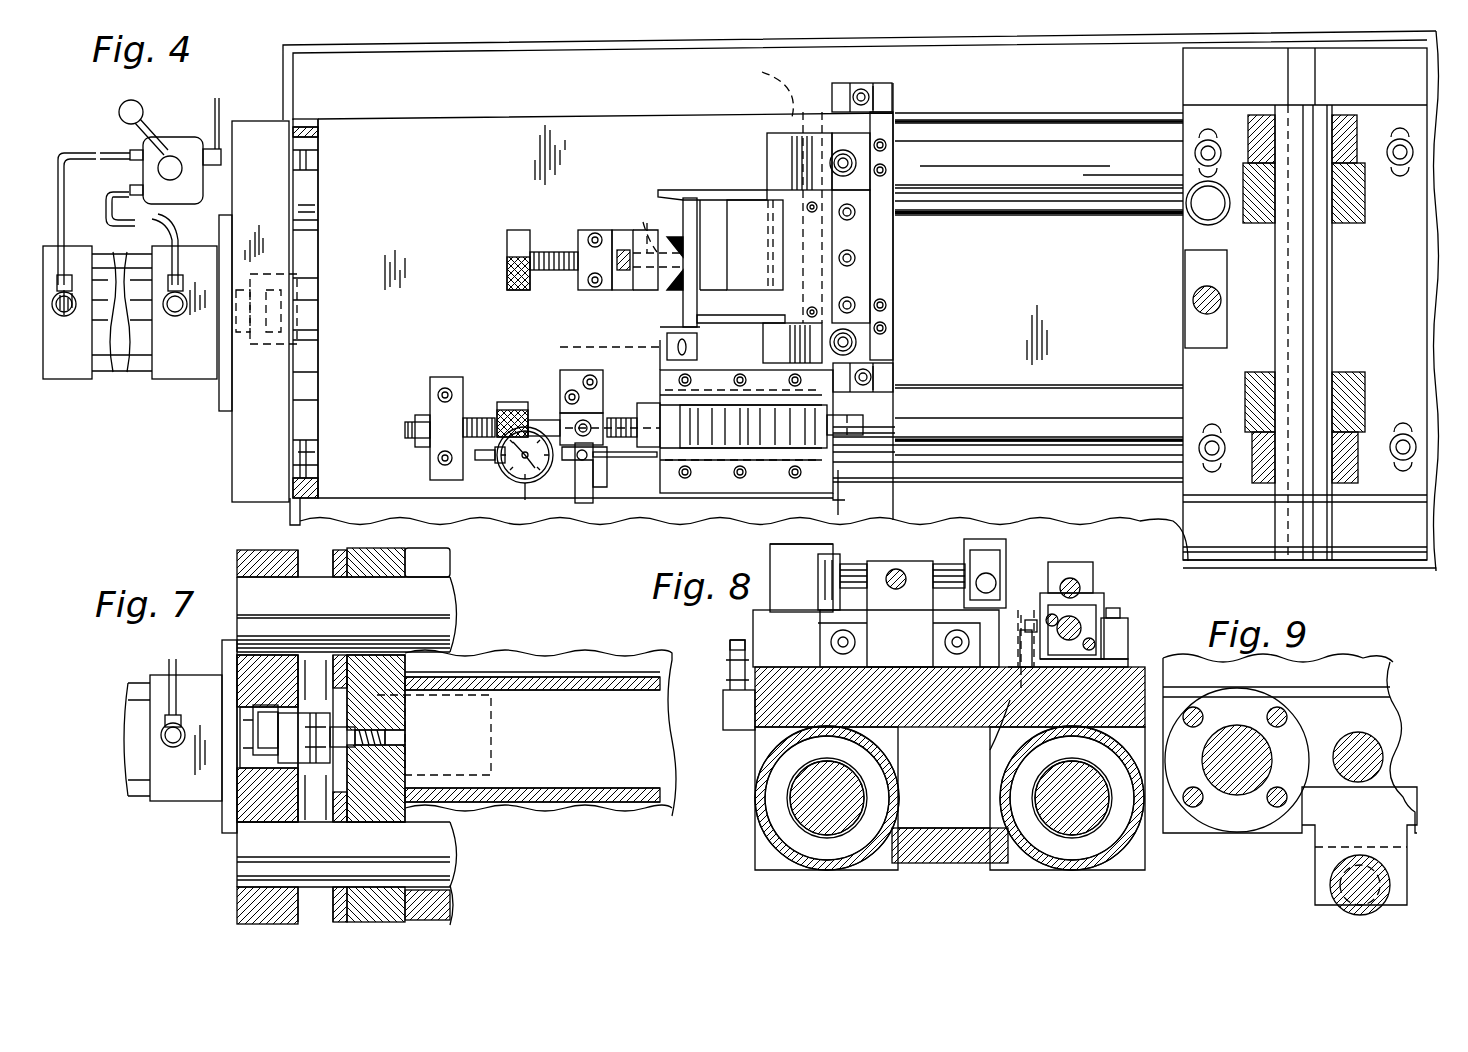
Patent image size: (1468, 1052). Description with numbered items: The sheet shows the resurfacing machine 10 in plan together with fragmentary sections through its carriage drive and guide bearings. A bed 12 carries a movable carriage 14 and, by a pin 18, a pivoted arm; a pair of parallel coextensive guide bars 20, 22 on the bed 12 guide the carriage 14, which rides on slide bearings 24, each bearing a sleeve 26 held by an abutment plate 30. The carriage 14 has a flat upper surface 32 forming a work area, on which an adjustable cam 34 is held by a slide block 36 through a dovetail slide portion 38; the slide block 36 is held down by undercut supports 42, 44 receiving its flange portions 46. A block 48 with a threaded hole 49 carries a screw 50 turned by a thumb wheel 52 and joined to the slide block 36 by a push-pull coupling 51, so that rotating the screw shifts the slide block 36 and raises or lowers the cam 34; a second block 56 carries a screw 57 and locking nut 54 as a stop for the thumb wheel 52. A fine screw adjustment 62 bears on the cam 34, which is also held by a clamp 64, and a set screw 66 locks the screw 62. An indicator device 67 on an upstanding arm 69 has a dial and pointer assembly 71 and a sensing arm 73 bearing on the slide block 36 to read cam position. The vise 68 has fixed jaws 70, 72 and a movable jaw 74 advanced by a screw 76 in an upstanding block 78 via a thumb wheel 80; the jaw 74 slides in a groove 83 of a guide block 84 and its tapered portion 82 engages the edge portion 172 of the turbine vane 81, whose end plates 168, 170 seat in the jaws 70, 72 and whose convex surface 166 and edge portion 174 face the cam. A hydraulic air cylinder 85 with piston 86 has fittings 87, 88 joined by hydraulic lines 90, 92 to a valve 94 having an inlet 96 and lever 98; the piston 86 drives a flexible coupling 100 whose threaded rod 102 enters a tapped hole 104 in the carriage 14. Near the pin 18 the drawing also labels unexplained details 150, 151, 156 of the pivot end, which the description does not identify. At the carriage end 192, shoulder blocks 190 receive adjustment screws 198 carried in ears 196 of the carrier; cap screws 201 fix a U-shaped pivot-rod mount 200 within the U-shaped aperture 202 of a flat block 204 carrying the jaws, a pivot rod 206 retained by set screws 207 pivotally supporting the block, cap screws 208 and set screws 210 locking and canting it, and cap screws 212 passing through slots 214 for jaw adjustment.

In FIG. 4, the resurfacing machine 10 is at (174, 458).
In FIG. 4, the bed 12 is at (283, 86).
In FIG. 7, the bed 12 is at (211, 552).
In FIG. 4, the carriage 14 is at (452, 108).
In FIG. 7, the carriage 14 is at (461, 910).
In FIG. 8, the carriage 14 is at (775, 735).
In FIG. 9, the carriage 14 is at (1206, 848).
In FIG. 4, the pin 18 is at (1327, 275).
In FIG. 4, the guide bar 20 is at (1102, 208).
In FIG. 7, the guide bar 20 is at (430, 603).
In FIG. 8, the guide bar 20 is at (795, 806).
In FIG. 9, the guide bar 20 is at (1262, 742).
In FIG. 4, the guide bar 22 is at (1122, 398).
In FIG. 7, the guide bar 22 is at (435, 840).
In FIG. 8, the guide bar 22 is at (1045, 793).
In FIG. 7, the slide bearing 24 is at (323, 668).
In FIG. 7, the sleeve 26 is at (382, 572).
In FIG. 7, the abutment plate 30 is at (312, 570).
In FIG. 9, the abutment plate 30 is at (1237, 760).
In FIG. 8, the upper surface 32 is at (1128, 666).
In FIG. 4, the adjustable cam 34 is at (718, 440).
In FIG. 8, the adjustable cam 34 is at (1083, 562).
In FIG. 8, the slide block 36 is at (1100, 600).
In FIG. 8, the dovetail slide portion 38 is at (1095, 585).
In FIG. 4, the support 42 is at (660, 375).
In FIG. 8, the support 42 is at (1025, 618).
In FIG. 4, the support 44 is at (648, 447).
In FIG. 8, the support 44 is at (1130, 630).
In FIG. 8, the flange portion 46 is at (1120, 650).
In FIG. 4, the block 48 is at (575, 370).
In FIG. 4, the threaded hole 49 is at (568, 410).
In FIG. 4, the screw 50 is at (545, 420).
In FIG. 4, the push-pull coupling 51 is at (628, 418).
In FIG. 8, the push-pull coupling 51 is at (1100, 625).
In FIG. 4, the thumb wheel 52 is at (505, 402).
In FIG. 4, the locking nut 54 is at (412, 422).
In FIG. 4, the second block 56 is at (436, 380).
In FIG. 4, the screw 57 is at (480, 418).
In FIG. 4, the fine screw adjustment 62 is at (585, 503).
In FIG. 4, the clamp 64 is at (852, 437).
In FIG. 4, the set screw 66 is at (537, 483).
In FIG. 4, the indicator device 67 is at (496, 476).
In FIG. 4, the vise 68 is at (646, 184).
In FIG. 8, the vise 68 is at (765, 548).
In FIG. 4, the upstanding arm 69 is at (572, 490).
In FIG. 4, the fixed jaw 70 is at (773, 133).
In FIG. 8, the fixed jaw 70 is at (788, 553).
In FIG. 4, the dial and pointer assembly 71 is at (515, 495).
In FIG. 4, the fixed jaw 72 is at (775, 352).
In FIG. 8, the fixed jaw 72 is at (995, 545).
In FIG. 4, the sensing arm 73 is at (632, 458).
In FIG. 4, the movable jaw 74 is at (630, 290).
In FIG. 4, the advanceable screw 76 is at (552, 252).
In FIG. 8, the advanceable screw 76 is at (896, 568).
In FIG. 4, the upstanding block 78 is at (580, 288).
In FIG. 8, the upstanding block 78 is at (875, 560).
In FIG. 4, the thumb wheel 80 is at (515, 232).
In FIG. 4, the turbine vane 81 is at (740, 200).
In FIG. 8, the turbine vane 81 is at (958, 568).
In FIG. 4, the tapered portion 82 is at (668, 270).
In FIG. 4, the groove 83 is at (640, 222).
In FIG. 4, the guide block 84 is at (665, 230).
In FIG. 4, the hydraulic air cylinder 85 is at (192, 385).
In FIG. 7, the hydraulic air cylinder 85 is at (190, 805).
In FIG. 4, the piston 86 is at (242, 350).
In FIG. 7, the piston 86 is at (256, 737).
In FIG. 4, the fitting 87 is at (183, 300).
In FIG. 7, the fitting 87 is at (183, 725).
In FIG. 4, the fitting 88 is at (74, 385).
In FIG. 4, the hydraulic line 90 is at (180, 240).
In FIG. 7, the hydraulic line 90 is at (169, 662).
In FIG. 4, the hydraulic line 92 is at (80, 150).
In FIG. 4, the valve 94 is at (183, 140).
In FIG. 4, the inlet 96 is at (212, 165).
In FIG. 4, the lever 98 is at (158, 115).
In FIG. 4, the flexible coupling 100 is at (325, 290).
In FIG. 7, the flexible coupling 100 is at (317, 755).
In FIG. 9, the flexible coupling 100 is at (1365, 740).
In FIG. 7, the threaded rod 102 is at (372, 727).
In FIG. 7, the tapped hole 104 is at (400, 740).
In FIG. 4, the pin 150 is at (1195, 295).
In FIG. 4, the bore 151 is at (1192, 225).
In FIG. 4, the plate 156 is at (1193, 320).
In FIG. 4, the convex surface 166 is at (745, 245).
In FIG. 4, the end plate 168 is at (683, 195).
In FIG. 8, the end plate 168 is at (818, 608).
In FIG. 4, the end plate 170 is at (665, 325).
In FIG. 4, the edge portion 172 is at (676, 188).
In FIG. 4, the edge portion 174 is at (760, 292).
In FIG. 4, the shoulder block 190 is at (880, 88).
In FIG. 4, the carriage end 192 is at (846, 480).
In FIG. 4, the ear 196 is at (861, 88).
In FIG. 8, the ear 196 is at (722, 660).
In FIG. 4, the adjustment screw 198 is at (870, 97).
In FIG. 8, the adjustment screw 198 is at (730, 645).
In FIG. 4, the pivot-rod mount 200 is at (872, 268).
In FIG. 4, the cap screw 201 is at (856, 215).
In FIG. 4, the U-shaped aperture 202 is at (880, 330).
In FIG. 4, the flat block 204 is at (955, 210).
In FIG. 4, the pivot rod 206 is at (762, 72).
In FIG. 4, the set screw 207 is at (808, 207).
In FIG. 4, the cap screw 208 is at (887, 328).
In FIG. 4, the set screw 210 is at (887, 148).
In FIG. 4, the cap screw 212 is at (840, 152).
In FIG. 4, the slot 214 is at (843, 150).